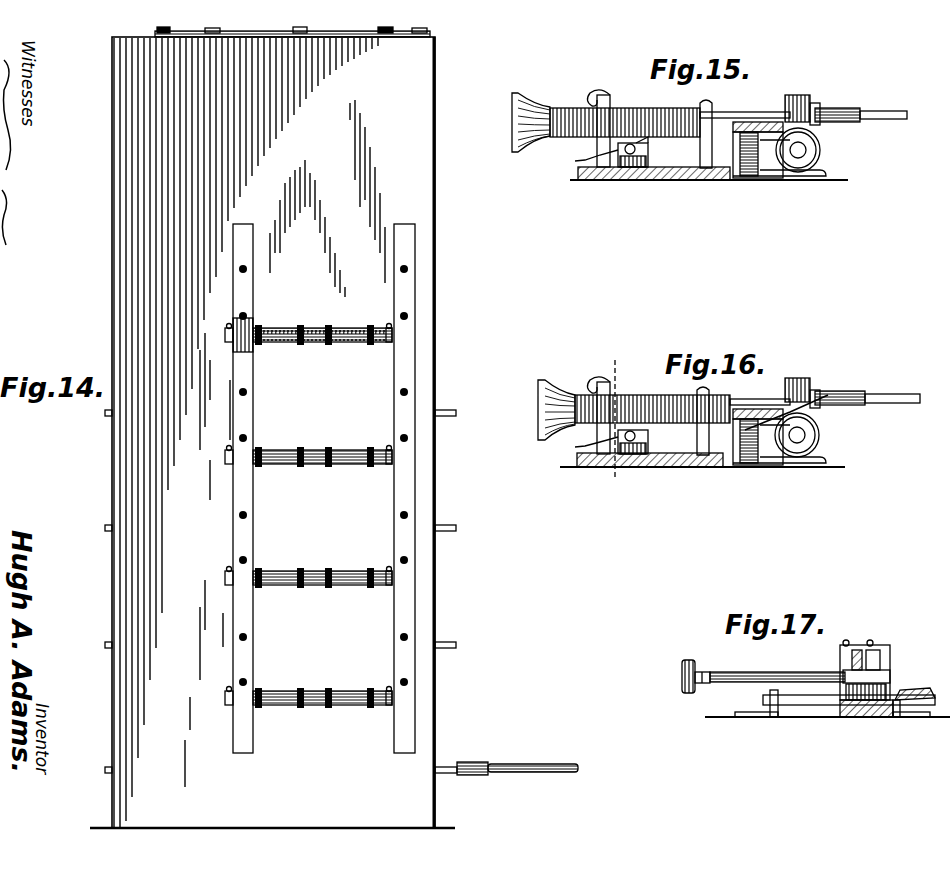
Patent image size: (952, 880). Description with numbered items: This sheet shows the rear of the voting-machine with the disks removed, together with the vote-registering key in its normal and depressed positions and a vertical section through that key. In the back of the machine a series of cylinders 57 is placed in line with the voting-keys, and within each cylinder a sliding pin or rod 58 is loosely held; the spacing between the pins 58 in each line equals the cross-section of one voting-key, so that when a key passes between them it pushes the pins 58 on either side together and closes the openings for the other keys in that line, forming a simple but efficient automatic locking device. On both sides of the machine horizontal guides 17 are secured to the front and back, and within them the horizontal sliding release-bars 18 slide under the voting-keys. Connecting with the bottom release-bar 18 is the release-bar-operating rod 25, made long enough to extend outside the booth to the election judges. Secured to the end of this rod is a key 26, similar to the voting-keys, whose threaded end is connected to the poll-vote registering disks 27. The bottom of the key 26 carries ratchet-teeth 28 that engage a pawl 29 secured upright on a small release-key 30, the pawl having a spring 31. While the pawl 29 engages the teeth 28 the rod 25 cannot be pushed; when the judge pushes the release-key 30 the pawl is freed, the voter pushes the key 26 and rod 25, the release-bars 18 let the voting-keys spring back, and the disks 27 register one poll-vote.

In FIG. 16, the horizontal guides 17 is at (613, 425).
In FIG. 14, the release-bars 18 is at (457, 413).
In FIG. 14, the release-bar-operating rod 25 is at (571, 756).
In FIG. 15, the key 26 is at (625, 122).
In FIG. 16, the key 26 is at (652, 409).
In FIG. 17, the key 26 is at (872, 648).
In FIG. 15, the poll-vote registering disks 27 is at (826, 148).
In FIG. 16, the poll-vote registering disks 27 is at (825, 440).
In FIG. 15, the ratchet-teeth 28 is at (690, 140).
In FIG. 16, the ratchet-teeth 28 is at (685, 425).
In FIG. 15, the pawl 29 is at (580, 158).
In FIG. 16, the pawl 29 is at (572, 446).
In FIG. 17, the pawl 29 is at (876, 670).
In FIG. 17, the release-key 30 is at (787, 671).
In FIG. 15, the spring 31 is at (649, 180).
In FIG. 16, the spring 31 is at (629, 468).
In FIG. 17, the spring 31 is at (849, 718).
In FIG. 14, the cylinders 57 is at (338, 327).
In FIG. 14, the sliding pins 58 is at (344, 345).